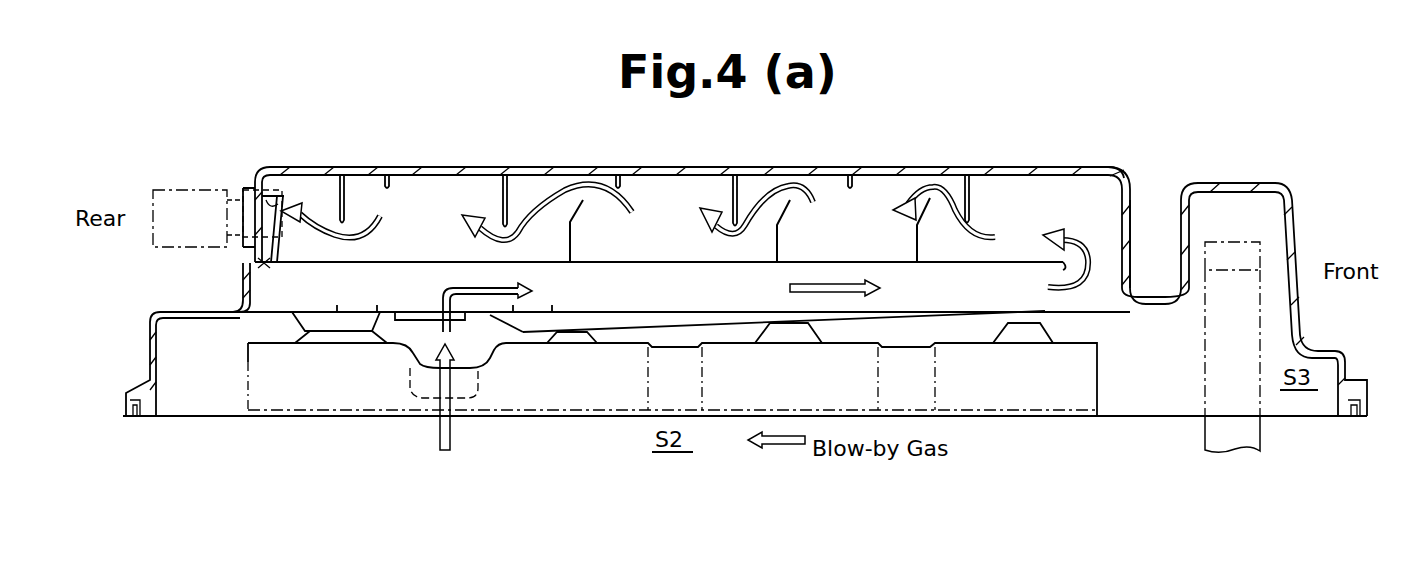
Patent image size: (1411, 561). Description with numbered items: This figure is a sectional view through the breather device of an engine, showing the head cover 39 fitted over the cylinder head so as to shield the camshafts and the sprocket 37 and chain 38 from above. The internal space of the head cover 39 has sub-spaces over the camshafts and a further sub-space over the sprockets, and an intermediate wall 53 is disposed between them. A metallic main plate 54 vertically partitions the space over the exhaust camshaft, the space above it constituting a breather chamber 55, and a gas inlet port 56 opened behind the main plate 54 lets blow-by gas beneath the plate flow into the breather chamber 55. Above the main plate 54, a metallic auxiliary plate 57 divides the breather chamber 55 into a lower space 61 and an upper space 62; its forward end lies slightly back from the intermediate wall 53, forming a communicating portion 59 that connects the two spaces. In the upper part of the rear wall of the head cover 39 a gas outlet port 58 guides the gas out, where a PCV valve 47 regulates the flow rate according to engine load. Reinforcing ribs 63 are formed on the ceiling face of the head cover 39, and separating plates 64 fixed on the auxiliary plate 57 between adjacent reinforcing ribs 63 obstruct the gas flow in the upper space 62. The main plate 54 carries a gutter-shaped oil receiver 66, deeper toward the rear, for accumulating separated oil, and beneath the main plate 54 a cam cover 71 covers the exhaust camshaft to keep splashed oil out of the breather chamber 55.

The sprocket 37 is at (1262, 432).
The chain 38 is at (1260, 248).
The head cover 39 is at (1053, 167).
The PCV valve 47 is at (197, 190).
The intermediate wall 53 is at (1120, 207).
The main plate 54 is at (1100, 313).
The breather chamber 55 is at (195, 247).
The gas inlet port 56 is at (398, 312).
The auxiliary plate 57 is at (1010, 262).
The gas outlet port 58 is at (264, 192).
The communicating portion 59 is at (1118, 263).
The lower space 61 is at (243, 290).
The upper space 62 is at (250, 263).
The reinforcing ribs 63 is at (503, 190).
The separating plates 64 is at (575, 240).
The oil receiver 66 is at (690, 311).
The cam cover 71 is at (258, 346).